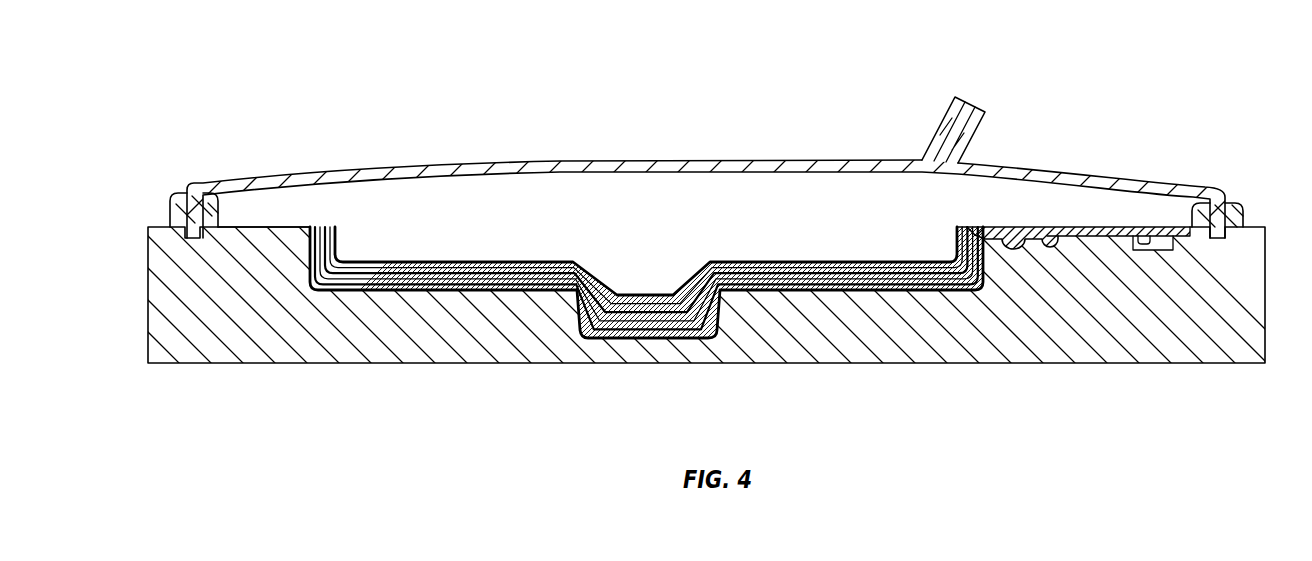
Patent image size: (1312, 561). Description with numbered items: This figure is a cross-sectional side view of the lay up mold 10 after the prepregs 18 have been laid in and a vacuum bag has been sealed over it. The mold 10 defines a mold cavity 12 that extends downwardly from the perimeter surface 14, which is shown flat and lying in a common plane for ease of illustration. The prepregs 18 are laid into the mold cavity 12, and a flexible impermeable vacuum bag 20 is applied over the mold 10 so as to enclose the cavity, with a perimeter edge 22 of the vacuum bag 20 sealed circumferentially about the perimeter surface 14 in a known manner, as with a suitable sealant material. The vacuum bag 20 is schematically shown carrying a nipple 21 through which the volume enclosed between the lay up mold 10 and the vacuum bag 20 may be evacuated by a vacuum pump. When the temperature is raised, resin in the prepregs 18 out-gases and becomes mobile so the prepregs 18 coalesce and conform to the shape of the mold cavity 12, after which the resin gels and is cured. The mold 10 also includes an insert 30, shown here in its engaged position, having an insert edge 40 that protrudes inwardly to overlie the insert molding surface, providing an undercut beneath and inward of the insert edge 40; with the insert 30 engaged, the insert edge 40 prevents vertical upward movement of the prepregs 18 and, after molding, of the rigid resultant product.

The lay up mold 10 is at (211, 114).
The mold cavity 12 is at (478, 290).
The perimeter surface 14 is at (250, 230).
The prepregs 18 is at (537, 259).
The vacuum bag 20 is at (590, 162).
The nipple 21 is at (975, 122).
The perimeter edge 22 is at (183, 213).
The insert 30 is at (1035, 253).
The insert edge 40 is at (965, 227).